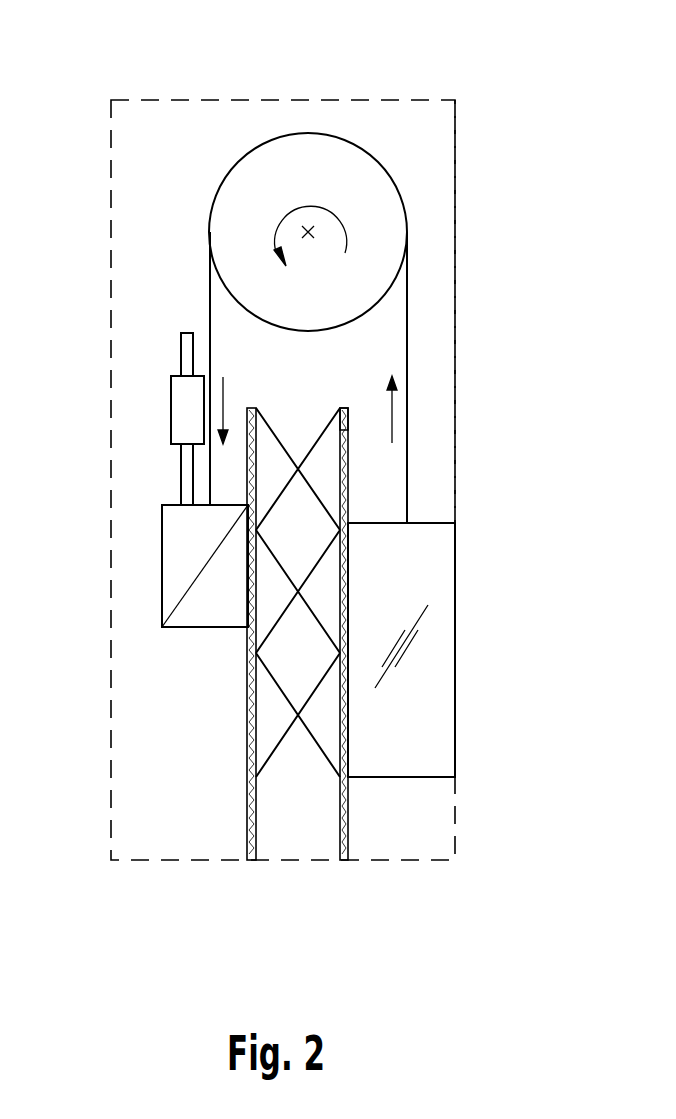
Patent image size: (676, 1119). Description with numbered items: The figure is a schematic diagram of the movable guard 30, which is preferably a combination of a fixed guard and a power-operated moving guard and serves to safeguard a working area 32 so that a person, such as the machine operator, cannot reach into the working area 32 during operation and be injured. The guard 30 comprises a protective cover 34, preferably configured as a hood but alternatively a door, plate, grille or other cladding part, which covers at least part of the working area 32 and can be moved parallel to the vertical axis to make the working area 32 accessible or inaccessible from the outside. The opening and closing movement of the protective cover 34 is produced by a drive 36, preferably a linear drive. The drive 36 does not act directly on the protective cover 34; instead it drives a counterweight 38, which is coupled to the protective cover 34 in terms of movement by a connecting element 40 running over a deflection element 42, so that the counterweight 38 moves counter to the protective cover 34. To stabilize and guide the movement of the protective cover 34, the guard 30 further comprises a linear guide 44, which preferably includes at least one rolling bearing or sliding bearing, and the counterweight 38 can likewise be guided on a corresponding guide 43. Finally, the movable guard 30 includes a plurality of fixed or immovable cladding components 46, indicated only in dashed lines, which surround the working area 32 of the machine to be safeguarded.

The movable guard 30 is at (507, 98).
The working area 32 is at (386, 840).
The protective cover 34 is at (447, 588).
The drive 36 is at (180, 414).
The counterweight 38 is at (175, 562).
The connecting element 40 is at (210, 302).
The deflection element 42 is at (387, 217).
The guide 43 is at (247, 735).
The linear guide 44 is at (349, 422).
The fixed cladding components 46 is at (456, 362).